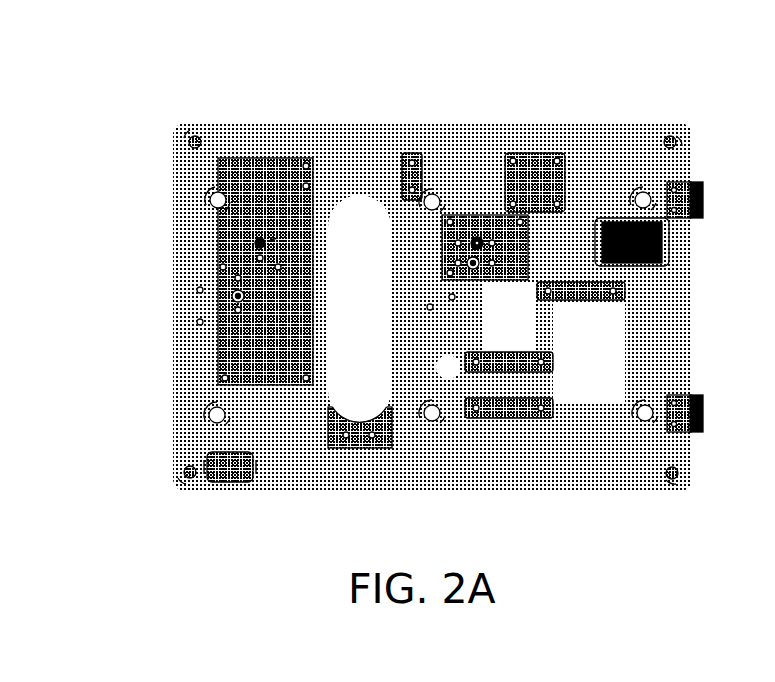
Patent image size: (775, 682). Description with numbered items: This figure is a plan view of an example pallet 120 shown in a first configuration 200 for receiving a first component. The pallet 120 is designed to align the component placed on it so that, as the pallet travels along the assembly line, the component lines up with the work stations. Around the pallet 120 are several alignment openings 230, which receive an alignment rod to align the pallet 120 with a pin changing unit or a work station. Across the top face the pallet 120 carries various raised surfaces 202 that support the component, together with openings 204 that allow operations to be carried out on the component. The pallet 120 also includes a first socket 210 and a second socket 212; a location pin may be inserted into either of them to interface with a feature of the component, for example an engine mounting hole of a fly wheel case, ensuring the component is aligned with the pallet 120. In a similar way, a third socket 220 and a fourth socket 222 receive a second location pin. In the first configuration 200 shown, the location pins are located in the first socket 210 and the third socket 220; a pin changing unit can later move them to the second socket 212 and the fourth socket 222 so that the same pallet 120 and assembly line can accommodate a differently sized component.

The first configuration 200 is at (431, 262).
The pallet 120 is at (208, 124).
The raised surfaces 202 is at (270, 175).
The openings 204 is at (354, 228).
The first socket 210 is at (255, 241).
The second socket 212 is at (233, 293).
The third socket 220 is at (479, 237).
The fourth socket 222 is at (480, 265).
The alignment openings 230 is at (430, 194).